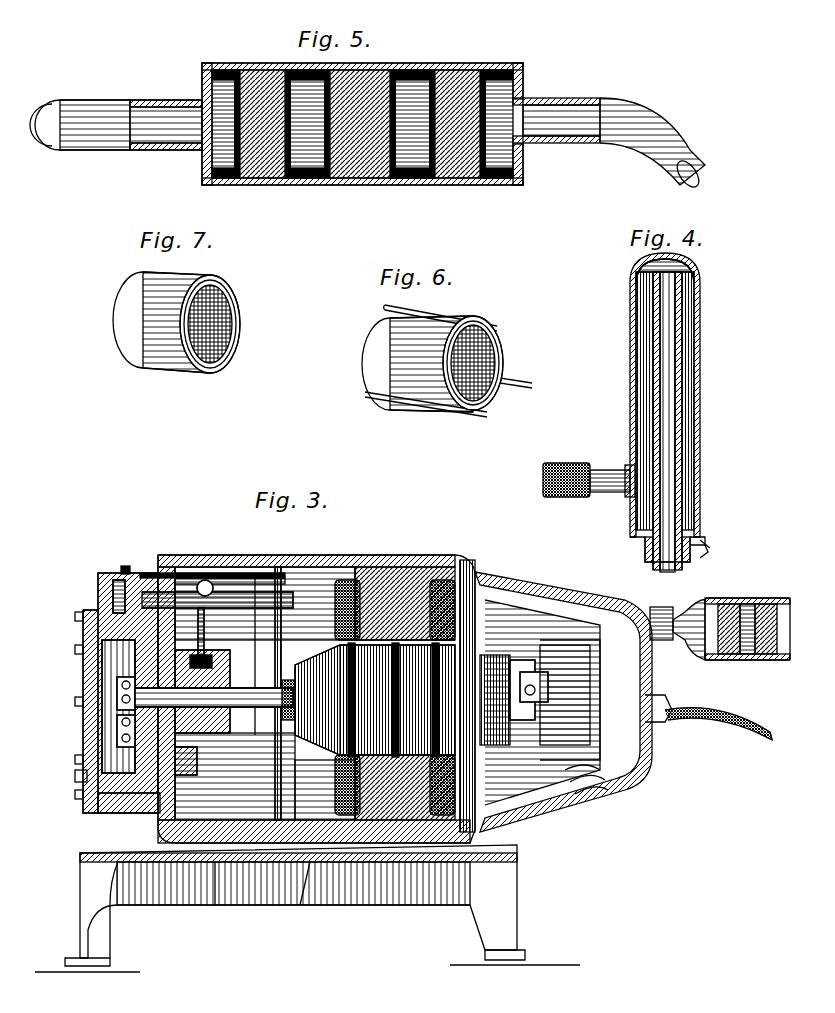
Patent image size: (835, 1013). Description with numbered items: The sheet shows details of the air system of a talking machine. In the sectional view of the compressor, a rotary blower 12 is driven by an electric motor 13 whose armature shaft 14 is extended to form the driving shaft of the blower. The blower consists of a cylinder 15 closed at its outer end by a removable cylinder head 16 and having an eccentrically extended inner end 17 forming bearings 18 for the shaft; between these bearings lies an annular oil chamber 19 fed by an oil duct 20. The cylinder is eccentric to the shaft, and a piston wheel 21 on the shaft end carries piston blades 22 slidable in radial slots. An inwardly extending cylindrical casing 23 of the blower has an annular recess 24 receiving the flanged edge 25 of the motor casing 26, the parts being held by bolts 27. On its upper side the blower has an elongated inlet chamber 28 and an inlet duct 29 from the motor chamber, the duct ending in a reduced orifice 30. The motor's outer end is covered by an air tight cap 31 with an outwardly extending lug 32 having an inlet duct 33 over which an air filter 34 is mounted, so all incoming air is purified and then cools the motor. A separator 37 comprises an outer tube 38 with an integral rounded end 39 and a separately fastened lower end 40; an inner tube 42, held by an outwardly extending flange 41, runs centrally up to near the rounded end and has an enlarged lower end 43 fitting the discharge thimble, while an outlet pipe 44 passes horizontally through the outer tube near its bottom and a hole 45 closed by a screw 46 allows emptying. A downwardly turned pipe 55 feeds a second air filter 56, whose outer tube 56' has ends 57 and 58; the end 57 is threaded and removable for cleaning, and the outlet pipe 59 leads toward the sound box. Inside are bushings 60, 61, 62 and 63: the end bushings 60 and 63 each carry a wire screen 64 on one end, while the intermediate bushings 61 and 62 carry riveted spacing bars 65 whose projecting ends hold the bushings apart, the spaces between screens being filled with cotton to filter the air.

In FIG. 3, the rotary blower 12 is at (90, 602).
In FIG. 3, the electric motor 13 is at (410, 567).
In FIG. 3, the armature shaft 14 is at (300, 760).
In FIG. 3, the cylinder 15 is at (100, 808).
In FIG. 3, the removable cylinder head 16 is at (78, 780).
In FIG. 3, the eccentrically extended inner end 17 is at (222, 865).
In FIG. 3, the bearings 18 is at (180, 915).
In FIG. 3, the annular oil chamber 19 is at (240, 722).
In FIG. 3, the oil duct 20 is at (208, 596).
In FIG. 3, the piston wheel 21 is at (110, 700).
In FIG. 3, the piston blades 22 is at (110, 748).
In FIG. 3, the cylindrical casing 23 is at (195, 560).
In FIG. 3, the annular recess 24 is at (252, 573).
In FIG. 3, the flanged edge 25 is at (277, 567).
In FIG. 3, the motor casing 26 is at (348, 548).
In FIG. 3, the bolts 27 is at (166, 580).
In FIG. 3, the elongated inlet chamber 28 is at (100, 580).
In FIG. 3, the inlet duct 29 is at (150, 600).
In FIG. 3, the orifice 30 is at (318, 580).
In FIG. 3, the air tight cap 31 is at (540, 592).
In FIG. 3, the outwardly extending lug 32 is at (662, 606).
In FIG. 4, the inlet duct 33 is at (540, 475).
In FIG. 3, the inlet duct 33 is at (635, 630).
In FIG. 3, the air filter 34 is at (712, 605).
In FIG. 4, the separator 37 is at (702, 348).
In FIG. 4, the outer tube 38 is at (700, 393).
In FIG. 4, the upper closed and rounded end 39 is at (690, 262).
In FIG. 4, the lower end 40 is at (632, 542).
In FIG. 4, the outwardly extending flange 41 is at (706, 550).
In FIG. 4, the inner tube 42 is at (682, 450).
In FIG. 4, the enlarged lower end 43 is at (655, 565).
In FIG. 4, the outlet pipe 44 is at (608, 468).
In FIG. 4, the hole 45 is at (700, 530).
In FIG. 4, the screw 46 is at (712, 545).
In FIG. 5, the downwardly turned pipe 55 is at (570, 98).
In FIG. 5, the second air filter 56 is at (359, 143).
In FIG. 5, the outer tube 56' is at (403, 198).
In FIG. 5, the end 57 is at (524, 78).
In FIG. 5, the end 58 is at (210, 92).
In FIG. 5, the outlet pipe 59 is at (150, 102).
In FIG. 5, the bushing 60 is at (225, 68).
In FIG. 7, the bushing 60 is at (155, 335).
In FIG. 5, the intermediate bushing 61 is at (310, 70).
In FIG. 5, the intermediate bushing 62 is at (412, 68).
In FIG. 5, the bushing 63 is at (497, 68).
In FIG. 5, the wire screen 64 is at (262, 180).
In FIG. 7, the wire screen 64 is at (228, 326).
In FIG. 6, the wire screen 64 is at (488, 352).
In FIG. 5, the spacing bars 65 is at (330, 62).
In FIG. 6, the spacing bars 65 is at (384, 310).